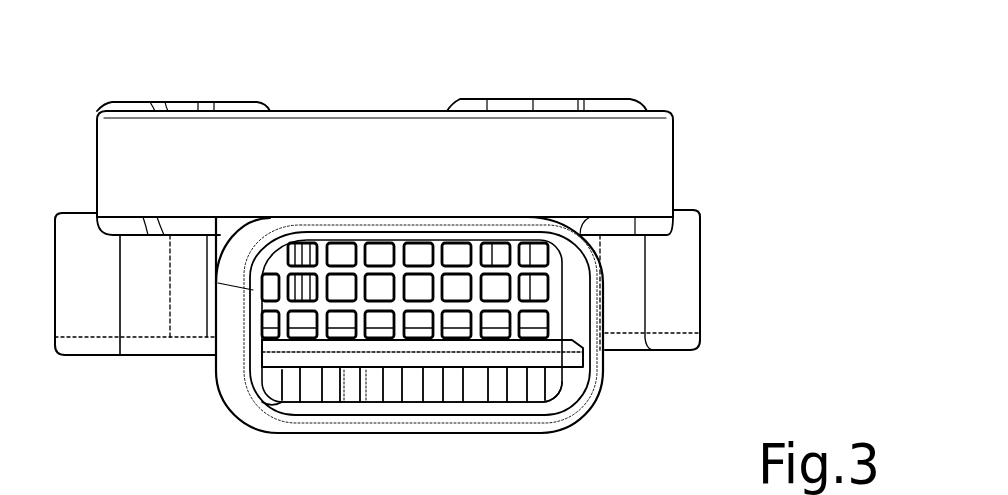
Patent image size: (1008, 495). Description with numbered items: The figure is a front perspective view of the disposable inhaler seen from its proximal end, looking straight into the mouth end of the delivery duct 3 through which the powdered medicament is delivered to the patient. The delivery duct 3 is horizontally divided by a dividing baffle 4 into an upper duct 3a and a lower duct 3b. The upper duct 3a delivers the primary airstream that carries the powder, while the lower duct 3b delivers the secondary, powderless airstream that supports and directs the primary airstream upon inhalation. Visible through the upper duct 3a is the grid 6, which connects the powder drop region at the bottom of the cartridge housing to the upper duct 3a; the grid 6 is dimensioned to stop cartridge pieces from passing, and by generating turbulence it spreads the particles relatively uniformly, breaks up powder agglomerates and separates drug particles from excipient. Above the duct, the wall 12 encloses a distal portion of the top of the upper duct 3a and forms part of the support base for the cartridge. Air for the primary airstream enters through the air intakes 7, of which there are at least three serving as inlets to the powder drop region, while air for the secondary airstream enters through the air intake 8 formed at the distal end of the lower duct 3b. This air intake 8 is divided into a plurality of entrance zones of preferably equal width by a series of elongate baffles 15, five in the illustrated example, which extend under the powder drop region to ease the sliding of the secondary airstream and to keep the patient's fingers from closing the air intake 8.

The delivery duct 3 is at (242, 397).
The upper duct 3a is at (578, 313).
The lower duct 3b is at (565, 392).
The dividing baffle 4 is at (283, 357).
The grid 6 is at (408, 297).
The air intakes 7 is at (87, 347).
The air intake 8 is at (417, 385).
The wall 12 is at (367, 130).
The elongate baffles 15 is at (273, 383).